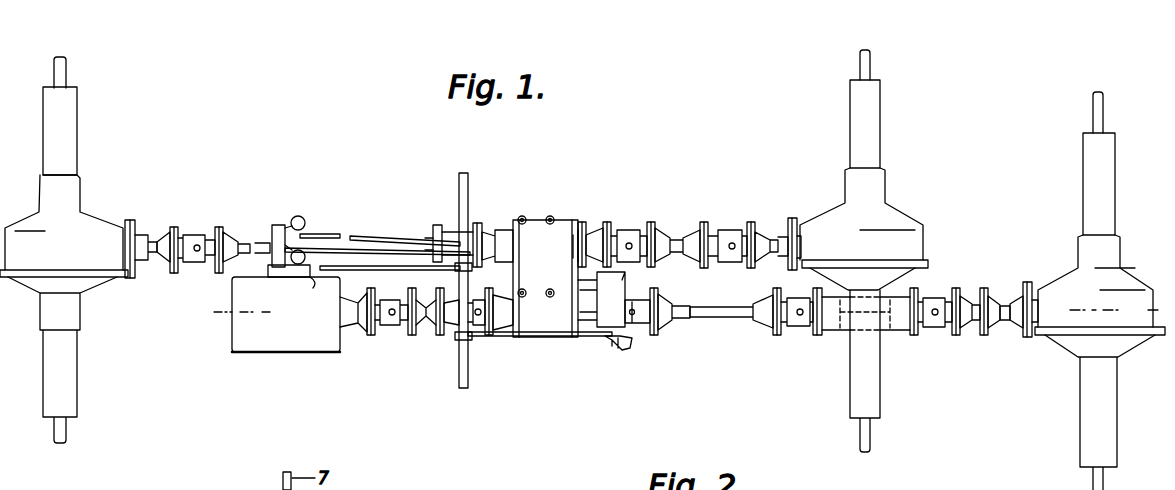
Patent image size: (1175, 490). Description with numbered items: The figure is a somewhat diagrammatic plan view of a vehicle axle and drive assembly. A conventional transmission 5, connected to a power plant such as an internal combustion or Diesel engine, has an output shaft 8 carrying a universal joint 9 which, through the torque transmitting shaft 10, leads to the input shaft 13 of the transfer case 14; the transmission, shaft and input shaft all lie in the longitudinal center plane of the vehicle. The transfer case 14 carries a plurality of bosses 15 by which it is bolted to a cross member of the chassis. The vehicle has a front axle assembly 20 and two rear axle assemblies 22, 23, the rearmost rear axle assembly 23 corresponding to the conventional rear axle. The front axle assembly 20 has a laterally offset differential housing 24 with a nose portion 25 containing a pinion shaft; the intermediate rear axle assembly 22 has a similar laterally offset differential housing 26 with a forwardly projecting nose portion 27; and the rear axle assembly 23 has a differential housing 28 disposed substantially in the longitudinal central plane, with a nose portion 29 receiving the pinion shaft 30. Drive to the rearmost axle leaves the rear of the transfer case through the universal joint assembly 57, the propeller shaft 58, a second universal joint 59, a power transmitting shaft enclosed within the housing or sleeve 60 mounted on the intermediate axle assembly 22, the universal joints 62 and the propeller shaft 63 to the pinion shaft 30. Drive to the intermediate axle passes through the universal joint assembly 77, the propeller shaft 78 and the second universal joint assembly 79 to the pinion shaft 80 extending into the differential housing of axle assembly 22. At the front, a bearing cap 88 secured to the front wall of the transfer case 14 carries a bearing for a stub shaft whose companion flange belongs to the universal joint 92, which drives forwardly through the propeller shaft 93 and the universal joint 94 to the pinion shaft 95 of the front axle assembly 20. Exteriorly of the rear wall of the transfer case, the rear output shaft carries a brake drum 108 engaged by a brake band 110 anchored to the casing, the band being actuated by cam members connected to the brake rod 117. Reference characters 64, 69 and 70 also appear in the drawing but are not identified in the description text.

The transmission 5 is at (267, 340).
The output shaft 8 is at (353, 322).
The universal joint 9 is at (398, 328).
The torque transmitting shaft 10 is at (428, 326).
The input shaft 13 is at (510, 328).
The transfer case 14 is at (548, 320).
The bosses 15 is at (550, 216).
The front axle assembly 20 is at (72, 118).
The rear axle assembly 22 is at (878, 138).
The rear axle assembly 23 is at (1088, 193).
The differential housing 24 is at (87, 225).
The nose portion 25 is at (140, 237).
The differential housing 26 is at (900, 220).
The nose portion 27 is at (779, 231).
The differential housing 28 is at (1063, 284).
The nose portion 29 is at (1012, 298).
The pinion shaft 30 is at (1002, 322).
The universal joint assembly 57 is at (642, 324).
The propeller shaft 58 is at (722, 313).
The universal joint 59 is at (797, 327).
The housing or sleeve 60 is at (834, 327).
The universal joints 62 is at (955, 290).
The propeller shaft 63 is at (972, 324).
The flange 64 is at (983, 336).
The collar 69 is at (472, 278).
The gear box cover 70 is at (575, 268).
The universal joint assembly 77 is at (627, 240).
The propeller shaft 78 is at (674, 242).
The universal joint assembly 79 is at (729, 231).
The pinion shaft 80 is at (776, 254).
The bearing cap 88 is at (498, 233).
The universal joint 92 is at (454, 232).
The propeller shaft 93 is at (348, 240).
The universal joint 94 is at (197, 237).
The pinion shaft 95 is at (157, 257).
The brake drum 108 is at (630, 344).
The brake band 110 is at (618, 281).
The brake rod 117 is at (563, 337).